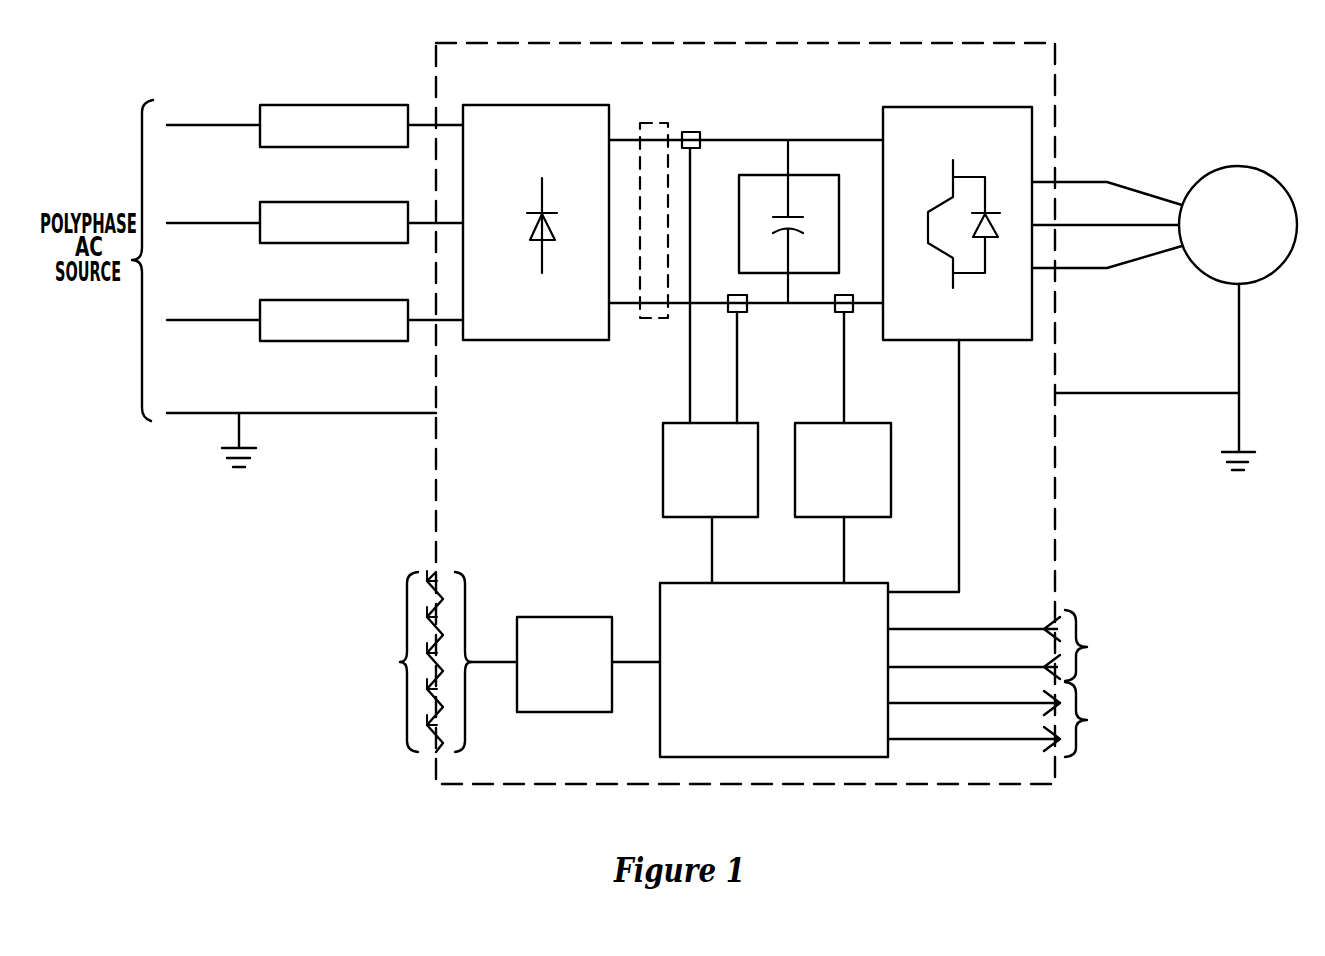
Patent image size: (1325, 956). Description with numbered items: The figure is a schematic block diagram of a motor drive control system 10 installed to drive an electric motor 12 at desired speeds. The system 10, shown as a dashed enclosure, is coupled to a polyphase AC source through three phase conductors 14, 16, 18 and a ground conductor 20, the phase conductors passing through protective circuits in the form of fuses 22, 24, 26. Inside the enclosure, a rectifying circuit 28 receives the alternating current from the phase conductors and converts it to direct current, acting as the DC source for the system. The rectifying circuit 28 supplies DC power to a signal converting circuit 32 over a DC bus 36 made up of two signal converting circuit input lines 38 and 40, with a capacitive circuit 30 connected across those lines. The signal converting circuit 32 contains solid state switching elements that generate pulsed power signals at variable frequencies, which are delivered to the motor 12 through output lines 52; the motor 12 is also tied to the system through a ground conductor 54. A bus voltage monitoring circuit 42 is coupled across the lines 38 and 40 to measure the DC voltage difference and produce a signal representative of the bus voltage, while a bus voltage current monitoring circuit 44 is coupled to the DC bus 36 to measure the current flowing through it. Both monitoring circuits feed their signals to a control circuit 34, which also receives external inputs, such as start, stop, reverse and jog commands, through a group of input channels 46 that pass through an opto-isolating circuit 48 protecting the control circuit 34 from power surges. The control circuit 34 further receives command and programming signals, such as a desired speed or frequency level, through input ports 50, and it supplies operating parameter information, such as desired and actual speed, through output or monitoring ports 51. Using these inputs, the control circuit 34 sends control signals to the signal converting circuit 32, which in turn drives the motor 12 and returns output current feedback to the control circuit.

The motor drive control system 10 is at (503, 801).
The electric motor 12 is at (1243, 167).
The phase conductor 14 is at (207, 125).
The phase conductor 16 is at (207, 223).
The phase conductor 18 is at (207, 320).
The ground conductor 20 is at (207, 413).
The fuse 22 is at (373, 105).
The fuse 24 is at (373, 202).
The fuse 26 is at (373, 300).
The rectifying circuit 28 is at (575, 105).
The capacitive circuit 30 is at (820, 175).
The signal converting circuit 32 is at (998, 107).
The control circuit 34 is at (867, 583).
The DC bus 36 is at (655, 123).
The signal converting circuit input line 38 is at (737, 140).
The signal converting circuit input line 40 is at (680, 305).
The bus voltage monitoring circuit 42 is at (747, 423).
The bus voltage current monitoring circuit 44 is at (867, 423).
The input channels 46 is at (423, 661).
The opto-isolating circuit 48 is at (582, 617).
The port 50 is at (1001, 645).
The output or monitoring port 51 is at (1001, 719).
The output line 52 is at (1070, 268).
The ground conductor 54 is at (1097, 393).